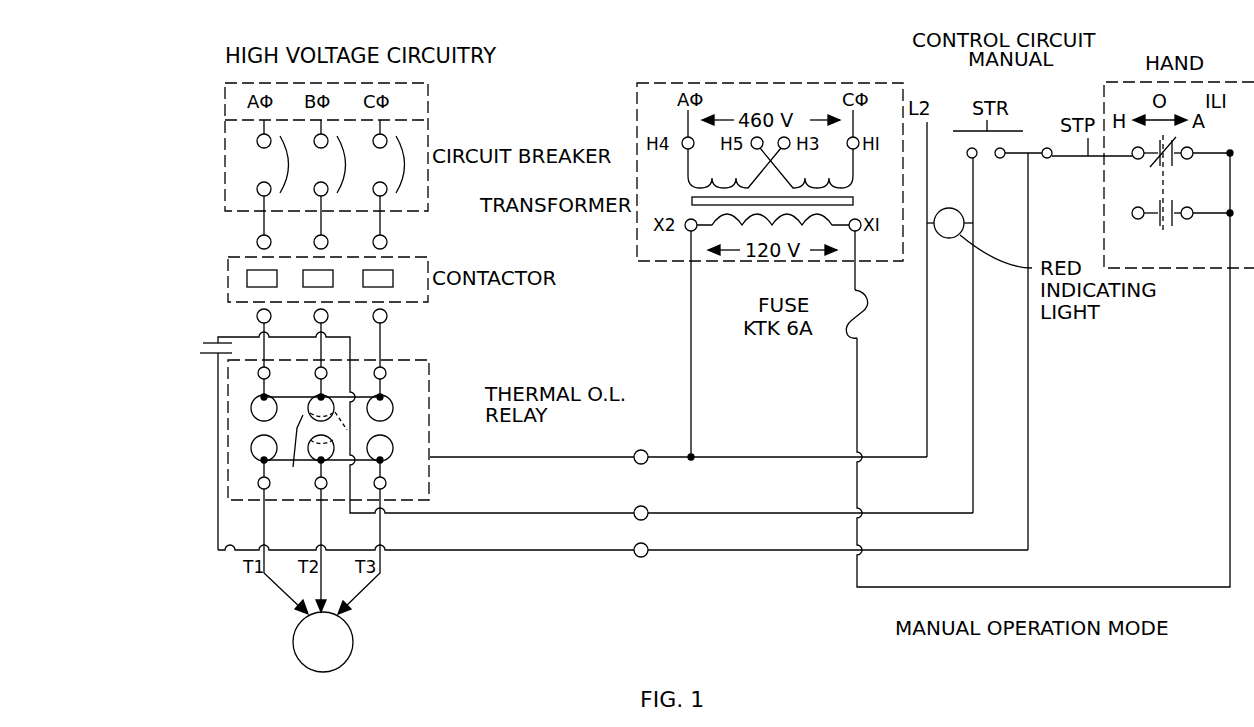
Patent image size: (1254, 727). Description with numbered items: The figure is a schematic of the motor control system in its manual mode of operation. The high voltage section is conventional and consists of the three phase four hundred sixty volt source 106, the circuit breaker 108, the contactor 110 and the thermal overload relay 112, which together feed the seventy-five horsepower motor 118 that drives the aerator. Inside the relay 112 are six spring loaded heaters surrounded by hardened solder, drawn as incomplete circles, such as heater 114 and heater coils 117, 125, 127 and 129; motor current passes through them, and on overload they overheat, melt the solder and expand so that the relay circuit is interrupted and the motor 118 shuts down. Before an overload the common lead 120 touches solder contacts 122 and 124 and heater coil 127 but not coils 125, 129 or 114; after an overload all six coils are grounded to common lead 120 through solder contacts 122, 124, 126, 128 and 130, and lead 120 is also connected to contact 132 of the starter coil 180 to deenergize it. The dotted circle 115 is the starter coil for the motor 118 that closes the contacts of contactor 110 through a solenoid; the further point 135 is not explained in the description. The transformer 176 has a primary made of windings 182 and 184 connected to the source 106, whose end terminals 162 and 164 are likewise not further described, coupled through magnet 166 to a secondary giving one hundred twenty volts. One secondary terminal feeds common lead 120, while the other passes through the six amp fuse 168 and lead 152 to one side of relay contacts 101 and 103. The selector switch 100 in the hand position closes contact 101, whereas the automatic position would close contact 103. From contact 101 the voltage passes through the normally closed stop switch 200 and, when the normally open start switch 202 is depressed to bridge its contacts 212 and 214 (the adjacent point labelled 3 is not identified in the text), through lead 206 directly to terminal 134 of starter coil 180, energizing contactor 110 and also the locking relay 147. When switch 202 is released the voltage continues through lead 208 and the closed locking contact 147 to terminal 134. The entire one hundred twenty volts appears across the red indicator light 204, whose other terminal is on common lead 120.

The selector switch 100 is at (1153, 167).
The relay contact 101 is at (1152, 167).
The relay contact 103 is at (1152, 223).
The 3 phase 460 volt source 106 is at (428, 108).
The circuit breaker 108 is at (428, 146).
The contactor 110 is at (428, 258).
The thermal overload relay 112 is at (330, 425).
The heater 114 is at (394, 409).
The starter coil 115 is at (314, 453).
The heater coil 117 is at (394, 447).
The motor 118 is at (355, 632).
The common lead 120 is at (523, 457).
The solder contact 122 is at (382, 462).
The solder contact 124 is at (324, 464).
The heater coil 125 is at (252, 413).
The solder contact 126 is at (262, 397).
The heater coil 127 is at (251, 448).
The solder contact 128 is at (323, 396).
The heater coil 129 is at (318, 395).
The solder contact 130 is at (382, 396).
The starter coil contact 132 is at (298, 428).
The starter coil terminal 134 is at (346, 428).
The overload relay terminal 135 is at (262, 461).
The locking contact 147 is at (203, 343).
The lead 152 is at (857, 388).
The transformer primary terminal 162 is at (687, 124).
The transformer primary terminal 164 is at (854, 124).
The magnet 166 is at (853, 201).
The fuse 168 is at (868, 320).
The transformer 176 is at (770, 157).
The starter coil 180 is at (293, 467).
The primary winding 182 is at (700, 188).
The primary winding 184 is at (843, 184).
The stop switch 200 is at (1067, 160).
The start switch 202 is at (984, 132).
The red indicator light 204 is at (948, 238).
The lead 206 is at (974, 300).
The lead 208 is at (1029, 348).
The start switch contact 212 is at (1000, 158).
The start switch contact 214 is at (968, 158).
The terminal 3 is at (962, 153).